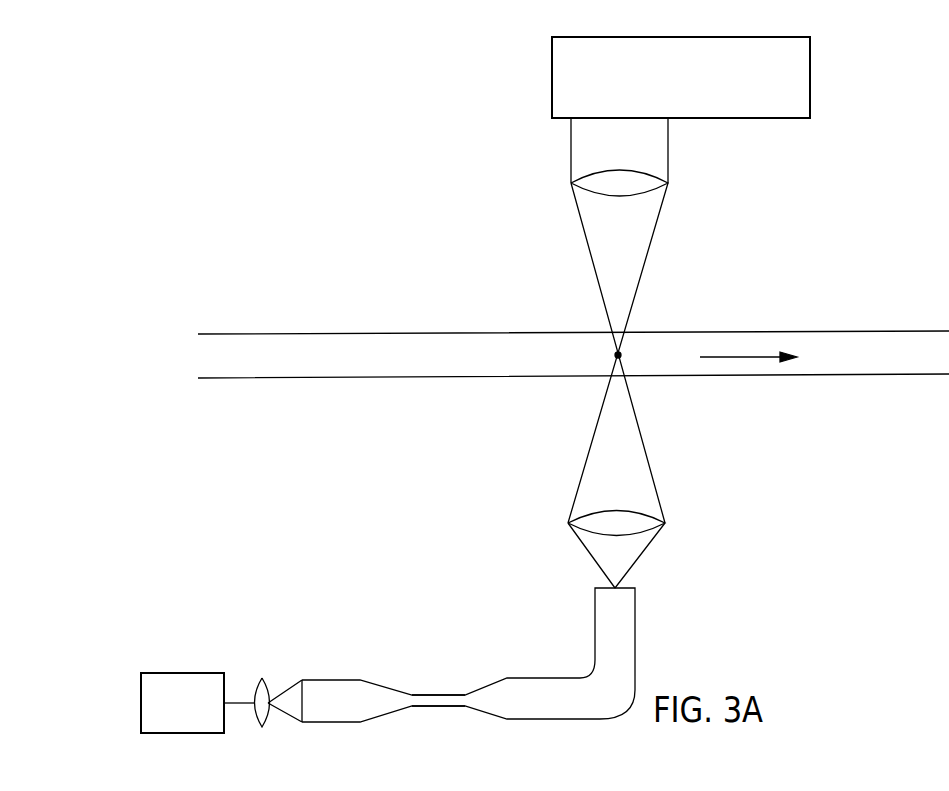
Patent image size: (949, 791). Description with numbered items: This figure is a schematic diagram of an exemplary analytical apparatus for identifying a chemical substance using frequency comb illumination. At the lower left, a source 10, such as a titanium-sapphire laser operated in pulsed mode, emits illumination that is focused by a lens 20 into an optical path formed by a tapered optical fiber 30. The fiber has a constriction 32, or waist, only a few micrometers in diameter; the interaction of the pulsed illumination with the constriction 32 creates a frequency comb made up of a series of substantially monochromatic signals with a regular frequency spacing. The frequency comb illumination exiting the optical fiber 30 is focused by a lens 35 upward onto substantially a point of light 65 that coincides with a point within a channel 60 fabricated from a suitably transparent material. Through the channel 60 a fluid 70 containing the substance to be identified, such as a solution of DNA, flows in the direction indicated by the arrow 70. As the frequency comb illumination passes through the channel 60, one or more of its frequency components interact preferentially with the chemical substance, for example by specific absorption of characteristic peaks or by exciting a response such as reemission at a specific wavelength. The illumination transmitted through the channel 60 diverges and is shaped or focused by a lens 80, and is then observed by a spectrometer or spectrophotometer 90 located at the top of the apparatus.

The source 10 is at (170, 673).
The lens 20 is at (263, 678).
The optical fiber 30 is at (327, 680).
The constriction 32 is at (433, 706).
The lens 35 is at (665, 523).
The channel 60 is at (518, 377).
The point of light 65 is at (616, 353).
The fluid 70 is at (735, 355).
The lens 80 is at (668, 183).
The spectrometer 90 is at (758, 118).